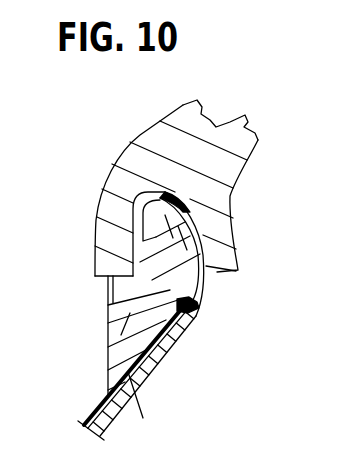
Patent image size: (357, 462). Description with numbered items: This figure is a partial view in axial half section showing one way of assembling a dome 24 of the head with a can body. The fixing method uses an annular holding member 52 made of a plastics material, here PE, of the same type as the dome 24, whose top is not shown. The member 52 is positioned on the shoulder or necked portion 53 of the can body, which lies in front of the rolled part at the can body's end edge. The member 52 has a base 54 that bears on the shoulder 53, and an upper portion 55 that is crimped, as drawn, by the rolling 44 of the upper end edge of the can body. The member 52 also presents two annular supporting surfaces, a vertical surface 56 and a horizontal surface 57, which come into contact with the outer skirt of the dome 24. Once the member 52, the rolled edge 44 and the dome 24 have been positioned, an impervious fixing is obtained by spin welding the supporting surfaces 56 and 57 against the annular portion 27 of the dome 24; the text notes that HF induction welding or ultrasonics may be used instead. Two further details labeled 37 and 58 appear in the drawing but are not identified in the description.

The dome 24 is at (152, 140).
The curved outer surface 37 is at (120, 164).
The annular portion of the dome 27 is at (110, 266).
The rolling of the upper end edge of the can body 44 is at (232, 206).
The upper portion 55 is at (204, 284).
The annular holding member 52 is at (110, 352).
The horizontal surface 57 is at (110, 307).
The vertical surface 56 is at (183, 323).
The shoulder or necked portion of the can body 53 is at (155, 362).
The base 54 is at (157, 403).
The end cap 58 is at (97, 397).